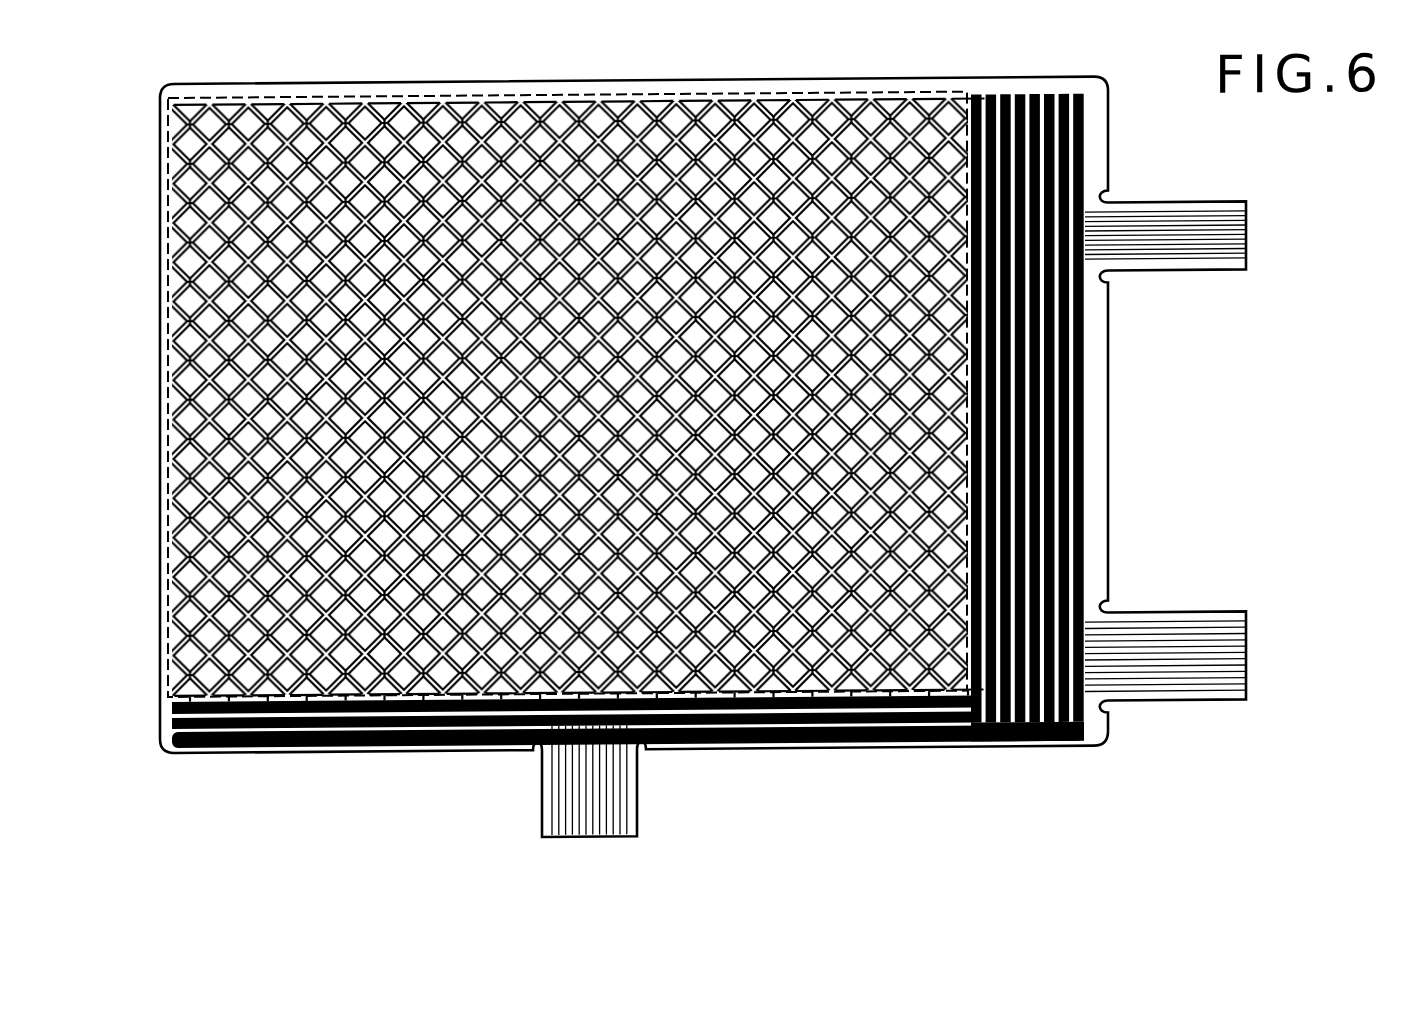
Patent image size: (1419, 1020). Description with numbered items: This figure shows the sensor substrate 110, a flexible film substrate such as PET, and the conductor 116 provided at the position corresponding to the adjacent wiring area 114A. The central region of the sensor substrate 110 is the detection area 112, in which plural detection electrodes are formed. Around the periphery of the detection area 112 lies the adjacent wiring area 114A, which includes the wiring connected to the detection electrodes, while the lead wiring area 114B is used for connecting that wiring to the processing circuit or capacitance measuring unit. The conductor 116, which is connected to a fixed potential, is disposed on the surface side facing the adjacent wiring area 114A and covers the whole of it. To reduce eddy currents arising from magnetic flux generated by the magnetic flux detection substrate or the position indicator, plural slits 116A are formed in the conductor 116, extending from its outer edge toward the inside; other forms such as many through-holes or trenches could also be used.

The sensor substrate 110 is at (1097, 95).
The detection area 112 is at (832, 100).
The adjacent wiring area 114A is at (1085, 397).
The lead wiring area 114B is at (1180, 620).
The conductor 116 is at (1085, 169).
The slits 116A is at (985, 103).